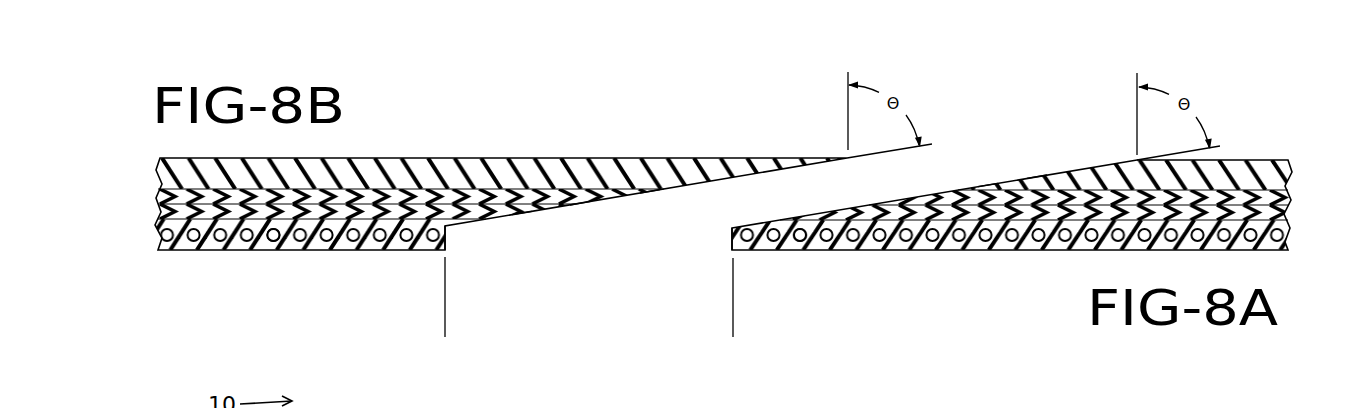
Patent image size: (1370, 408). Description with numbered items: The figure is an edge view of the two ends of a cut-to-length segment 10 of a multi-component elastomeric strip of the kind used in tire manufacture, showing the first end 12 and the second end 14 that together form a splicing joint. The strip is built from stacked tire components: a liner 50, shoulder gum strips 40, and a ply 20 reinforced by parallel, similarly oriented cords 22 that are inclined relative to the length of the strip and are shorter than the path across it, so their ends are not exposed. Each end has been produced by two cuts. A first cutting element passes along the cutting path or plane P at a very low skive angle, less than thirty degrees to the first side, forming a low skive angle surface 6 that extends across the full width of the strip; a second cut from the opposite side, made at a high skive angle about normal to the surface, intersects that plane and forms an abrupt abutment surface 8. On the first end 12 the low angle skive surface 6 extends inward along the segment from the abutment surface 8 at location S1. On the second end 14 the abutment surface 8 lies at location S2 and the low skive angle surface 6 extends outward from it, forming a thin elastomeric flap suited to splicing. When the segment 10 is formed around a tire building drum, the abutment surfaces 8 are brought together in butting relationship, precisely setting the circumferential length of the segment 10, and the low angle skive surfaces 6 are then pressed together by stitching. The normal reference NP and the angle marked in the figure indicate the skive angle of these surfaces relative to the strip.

In FIG. 8B, the segment 10 is at (485, 145).
In FIG. 8B, the liner 50 is at (610, 165).
In FIG. 8A, the liner 50 is at (1265, 165).
In FIG. 8B, the shoulder gum strips 40 is at (162, 197).
In FIG. 8A, the shoulder gum strips 40 is at (1288, 197).
In FIG. 8B, the ply 20 is at (185, 251).
In FIG. 8A, the ply 20 is at (882, 251).
In FIG. 8B, the cords 22 is at (268, 238).
In FIG. 8A, the cords 22 is at (799, 238).
In FIG. 8B, the low skive angle surface 6 is at (647, 194).
In FIG. 8A, the low skive angle surface 6 is at (986, 185).
In FIG. 8B, the abutment surface 8 is at (447, 242).
In FIG. 8A, the abutment surface 8 is at (731, 234).
In FIG. 8B, the second end 14 is at (583, 212).
In FIG. 8A, the first end 12 is at (1082, 160).
In FIG. 8B, the cutting path or plane P is at (522, 214).
In FIG. 8A, the cutting path or plane P is at (1037, 177).
In FIG. 8B, the normal plane NP is at (850, 97).
In FIG. 8A, the normal plane NP is at (1137, 99).
In FIG. 8A, the location S1 is at (737, 317).
In FIG. 8B, the location S2 is at (449, 316).